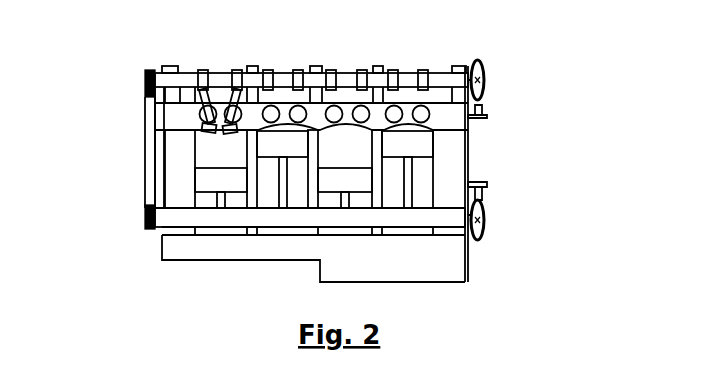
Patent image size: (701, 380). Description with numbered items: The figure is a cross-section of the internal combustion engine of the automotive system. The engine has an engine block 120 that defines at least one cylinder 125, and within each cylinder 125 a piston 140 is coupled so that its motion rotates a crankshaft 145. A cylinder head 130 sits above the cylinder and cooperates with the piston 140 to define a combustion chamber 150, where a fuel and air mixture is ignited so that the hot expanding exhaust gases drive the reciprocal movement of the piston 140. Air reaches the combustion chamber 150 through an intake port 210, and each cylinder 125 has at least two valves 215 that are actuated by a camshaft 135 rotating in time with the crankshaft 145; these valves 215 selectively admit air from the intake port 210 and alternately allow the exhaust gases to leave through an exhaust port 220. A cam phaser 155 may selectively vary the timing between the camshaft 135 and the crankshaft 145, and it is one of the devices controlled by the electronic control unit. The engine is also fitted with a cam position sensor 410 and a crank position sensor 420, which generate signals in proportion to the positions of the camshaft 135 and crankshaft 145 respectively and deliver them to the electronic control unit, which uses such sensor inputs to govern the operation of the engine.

The engine block 120 is at (165, 170).
The cylinder 125 is at (320, 152).
The cylinder head 130 is at (163, 124).
The camshaft 135 is at (213, 73).
The piston 140 is at (348, 178).
The crankshaft 145 is at (190, 222).
The combustion chamber 150 is at (410, 126).
The cam phaser 155 is at (147, 82).
The intake port 210 is at (333, 103).
The valves 215 is at (200, 126).
The exhaust port 220 is at (293, 100).
The cam position sensor 410 is at (485, 118).
The crank position sensor 420 is at (483, 183).